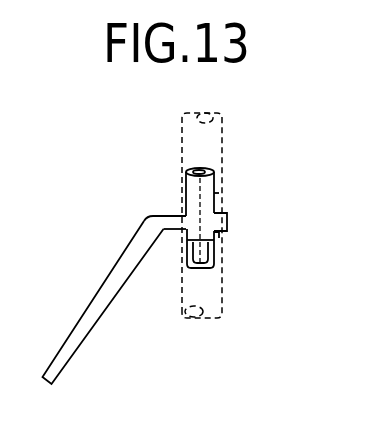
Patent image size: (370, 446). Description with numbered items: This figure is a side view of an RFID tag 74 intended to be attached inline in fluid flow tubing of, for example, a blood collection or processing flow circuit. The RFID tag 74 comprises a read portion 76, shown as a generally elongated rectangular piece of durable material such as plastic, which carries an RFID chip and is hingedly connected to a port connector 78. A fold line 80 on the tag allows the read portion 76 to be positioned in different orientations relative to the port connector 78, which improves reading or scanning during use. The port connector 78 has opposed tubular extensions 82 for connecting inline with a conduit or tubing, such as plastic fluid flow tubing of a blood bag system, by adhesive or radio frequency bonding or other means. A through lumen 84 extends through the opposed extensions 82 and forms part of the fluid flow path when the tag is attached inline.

The RFID tag 74 is at (112, 265).
The read portion 76 is at (84, 312).
The port connector 78 is at (225, 214).
The fold line 80 is at (148, 215).
The tubular extensions 82 is at (214, 193).
The through lumen 84 is at (201, 168).